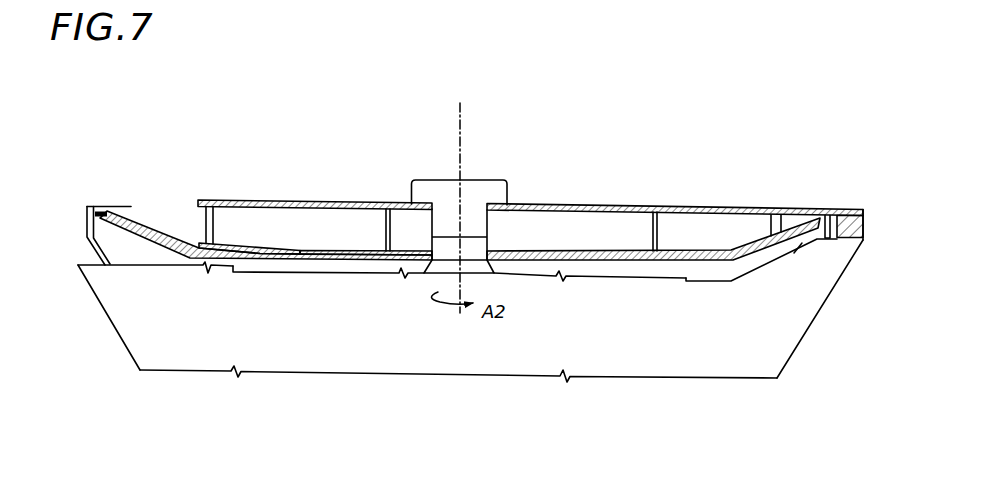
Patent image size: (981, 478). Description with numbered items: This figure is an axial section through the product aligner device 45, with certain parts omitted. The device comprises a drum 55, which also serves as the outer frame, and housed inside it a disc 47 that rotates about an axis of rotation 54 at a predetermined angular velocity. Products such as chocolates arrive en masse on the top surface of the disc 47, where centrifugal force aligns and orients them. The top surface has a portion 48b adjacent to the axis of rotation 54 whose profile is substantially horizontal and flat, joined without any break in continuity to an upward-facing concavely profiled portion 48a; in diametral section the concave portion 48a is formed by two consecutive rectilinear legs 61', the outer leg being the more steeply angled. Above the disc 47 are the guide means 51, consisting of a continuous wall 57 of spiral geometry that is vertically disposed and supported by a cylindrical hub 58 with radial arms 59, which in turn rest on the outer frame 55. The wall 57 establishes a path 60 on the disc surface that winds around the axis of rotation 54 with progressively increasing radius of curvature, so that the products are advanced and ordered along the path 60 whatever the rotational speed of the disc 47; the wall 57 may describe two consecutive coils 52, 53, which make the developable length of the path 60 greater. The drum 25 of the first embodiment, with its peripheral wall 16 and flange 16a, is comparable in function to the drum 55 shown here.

The peripheral wall 16 is at (82, 229).
The cover flange 16a is at (92, 206).
The drum 25 is at (84, 248).
The product aligner device 45 is at (118, 367).
The disc 47 is at (767, 250).
The concavely profiled portion 48a is at (220, 240).
The flat portion 48b is at (350, 245).
The guide means 51 is at (646, 243).
The coil 52 is at (396, 260).
The coil 53 is at (129, 206).
The axis of rotation 54 is at (462, 116).
The outer frame 55 is at (847, 228).
The continuous wall 57 is at (653, 212).
The cylindrical hub 58 is at (497, 172).
The radial arms 59 is at (599, 205).
The path 60 is at (186, 239).
The rectilinear leg 61' is at (477, 292).